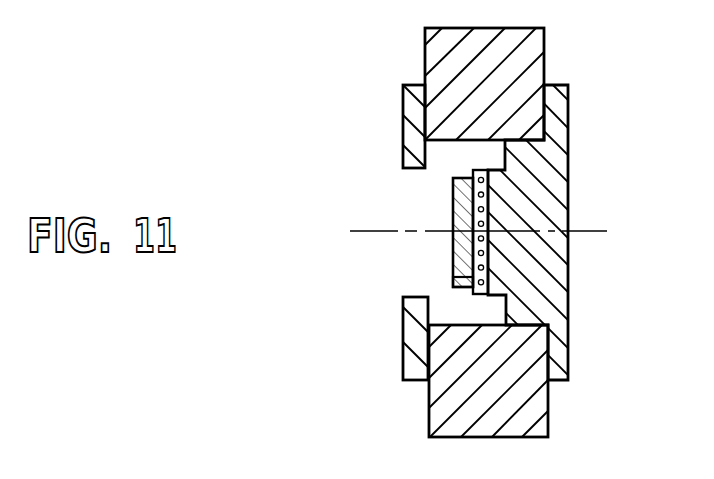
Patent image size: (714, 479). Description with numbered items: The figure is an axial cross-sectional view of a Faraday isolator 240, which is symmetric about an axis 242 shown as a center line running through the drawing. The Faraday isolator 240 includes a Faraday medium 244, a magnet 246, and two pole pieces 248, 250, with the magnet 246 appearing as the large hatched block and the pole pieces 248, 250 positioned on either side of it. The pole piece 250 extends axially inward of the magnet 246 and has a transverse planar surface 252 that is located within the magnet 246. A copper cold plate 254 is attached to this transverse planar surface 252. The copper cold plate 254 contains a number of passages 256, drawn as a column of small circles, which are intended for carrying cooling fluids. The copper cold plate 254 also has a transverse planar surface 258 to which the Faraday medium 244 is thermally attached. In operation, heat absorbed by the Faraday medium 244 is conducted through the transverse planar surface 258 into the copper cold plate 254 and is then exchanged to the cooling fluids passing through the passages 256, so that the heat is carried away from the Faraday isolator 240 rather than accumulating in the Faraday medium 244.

The Faraday isolator 240 is at (360, 132).
The axis 242 is at (366, 234).
The Faraday medium 244 is at (422, 235).
The magnet 246 is at (535, 28).
The pole piece 248 is at (410, 85).
The pole piece 250 is at (568, 120).
The transverse planar surface 252 is at (502, 193).
The copper cold plate 254 is at (455, 274).
The passages 256 is at (456, 181).
The transverse planar surface 258 is at (454, 283).